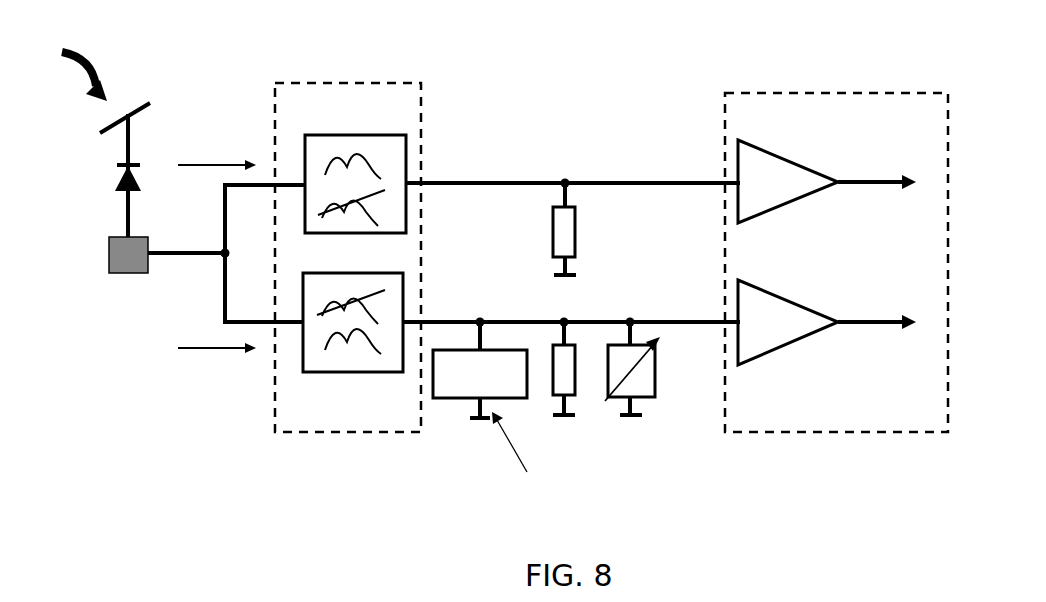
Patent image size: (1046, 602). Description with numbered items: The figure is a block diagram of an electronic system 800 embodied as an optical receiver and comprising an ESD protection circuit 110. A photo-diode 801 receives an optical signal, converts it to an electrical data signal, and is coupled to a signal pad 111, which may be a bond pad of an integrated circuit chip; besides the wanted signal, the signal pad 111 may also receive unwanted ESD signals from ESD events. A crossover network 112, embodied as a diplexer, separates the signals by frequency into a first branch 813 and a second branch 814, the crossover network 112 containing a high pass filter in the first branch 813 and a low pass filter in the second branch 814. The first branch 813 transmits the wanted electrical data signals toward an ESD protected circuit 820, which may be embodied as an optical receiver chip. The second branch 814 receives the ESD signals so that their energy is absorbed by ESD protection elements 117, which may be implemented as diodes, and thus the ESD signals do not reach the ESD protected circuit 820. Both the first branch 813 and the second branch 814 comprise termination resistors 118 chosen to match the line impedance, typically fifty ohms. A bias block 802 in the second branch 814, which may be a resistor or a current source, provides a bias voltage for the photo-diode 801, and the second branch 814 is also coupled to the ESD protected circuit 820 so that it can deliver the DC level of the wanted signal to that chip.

The ESD protection circuit 110 is at (164, 68).
The photo-diode 801 is at (118, 180).
The signal pad 111 is at (108, 248).
The first branch 813 is at (180, 160).
The second branch 814 is at (184, 362).
The crossover network 112 is at (421, 101).
The termination resistors 118 is at (575, 236).
The ESD protection elements 117 is at (436, 400).
The bias block 802 is at (656, 397).
The ESD protected circuit 820 is at (866, 433).
The electronic system 800 is at (930, 565).